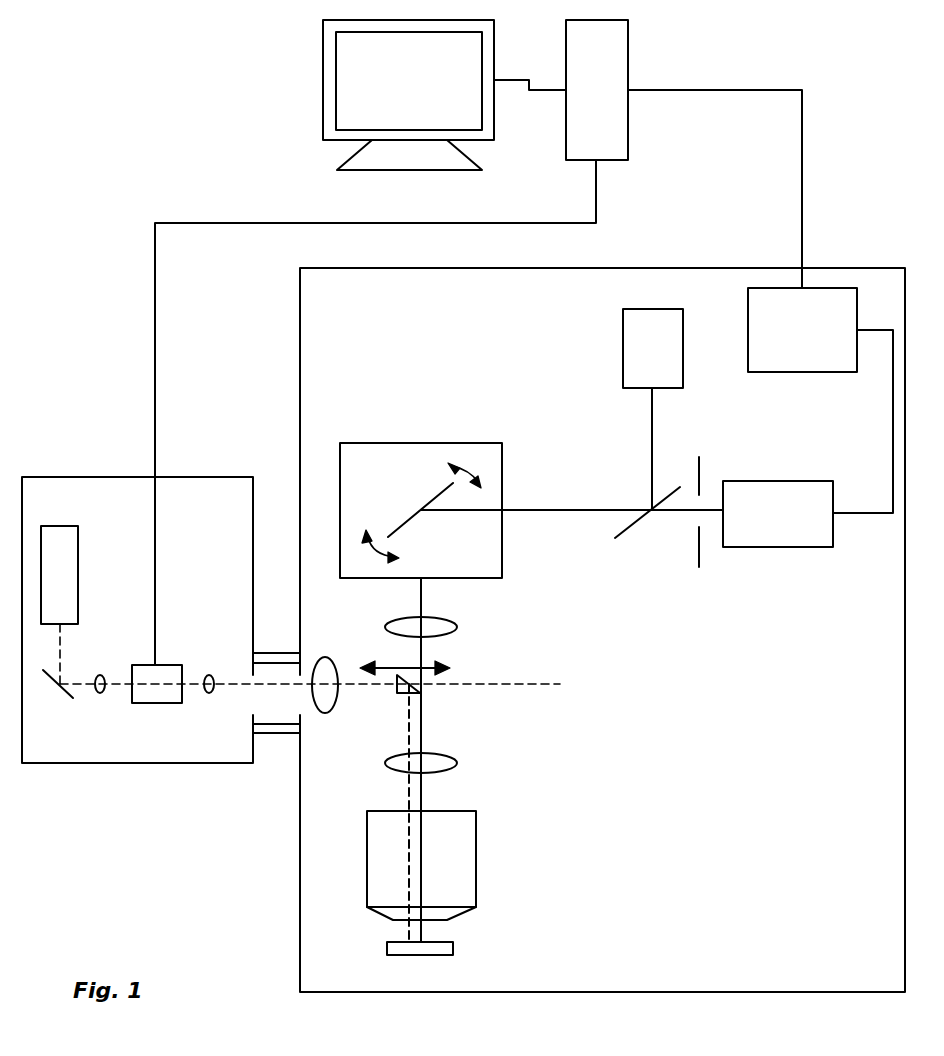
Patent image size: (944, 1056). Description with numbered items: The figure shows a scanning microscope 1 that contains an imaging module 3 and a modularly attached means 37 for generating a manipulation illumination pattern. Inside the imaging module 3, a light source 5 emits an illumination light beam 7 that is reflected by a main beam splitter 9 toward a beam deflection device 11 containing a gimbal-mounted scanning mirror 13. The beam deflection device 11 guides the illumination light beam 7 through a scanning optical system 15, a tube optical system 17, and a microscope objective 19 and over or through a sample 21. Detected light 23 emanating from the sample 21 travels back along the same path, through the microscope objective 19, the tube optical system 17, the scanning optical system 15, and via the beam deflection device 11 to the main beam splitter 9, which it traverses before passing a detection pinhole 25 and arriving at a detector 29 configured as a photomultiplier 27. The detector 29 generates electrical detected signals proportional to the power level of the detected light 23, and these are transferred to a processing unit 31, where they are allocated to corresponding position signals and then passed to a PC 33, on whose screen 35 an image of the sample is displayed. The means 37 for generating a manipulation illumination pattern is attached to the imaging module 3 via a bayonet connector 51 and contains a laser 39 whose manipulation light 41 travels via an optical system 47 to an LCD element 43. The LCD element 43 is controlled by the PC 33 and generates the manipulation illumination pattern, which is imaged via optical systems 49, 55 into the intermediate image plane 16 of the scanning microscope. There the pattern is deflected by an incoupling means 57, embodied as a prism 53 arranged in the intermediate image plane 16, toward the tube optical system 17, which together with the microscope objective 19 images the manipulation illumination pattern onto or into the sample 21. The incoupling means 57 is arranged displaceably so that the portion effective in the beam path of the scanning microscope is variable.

The scanning microscope 1 is at (145, 211).
The imaging module 3 is at (315, 298).
The light source 5 is at (640, 348).
The illumination light beam 7 is at (652, 447).
The main beam splitter 9 is at (628, 527).
The beam deflection device 11 is at (373, 470).
The scanning mirror 13 is at (432, 495).
The scanning optical system 15 is at (433, 627).
The intermediate image plane 16 is at (326, 684).
The tube optical system 17 is at (433, 763).
The microscope objective 19 is at (455, 860).
The sample 21 is at (433, 942).
The detected light 23 is at (674, 513).
The detection pinhole 25 is at (700, 556).
The photomultiplier 27 is at (772, 517).
The detector 29 is at (797, 575).
The processing unit 31 is at (762, 338).
The PC 33 is at (615, 122).
The screen 35 is at (385, 70).
The means for generating a manipulation illumination pattern 37 is at (70, 485).
The laser 39 is at (58, 536).
The manipulation light 41 is at (60, 657).
The LCD element 43 is at (155, 695).
The optical system 47 is at (105, 692).
The optical system 49 is at (215, 690).
The bayonet connector 51 is at (265, 733).
The prism 53 is at (420, 690).
The optical system 55 is at (327, 672).
The incoupling means 57 is at (438, 684).